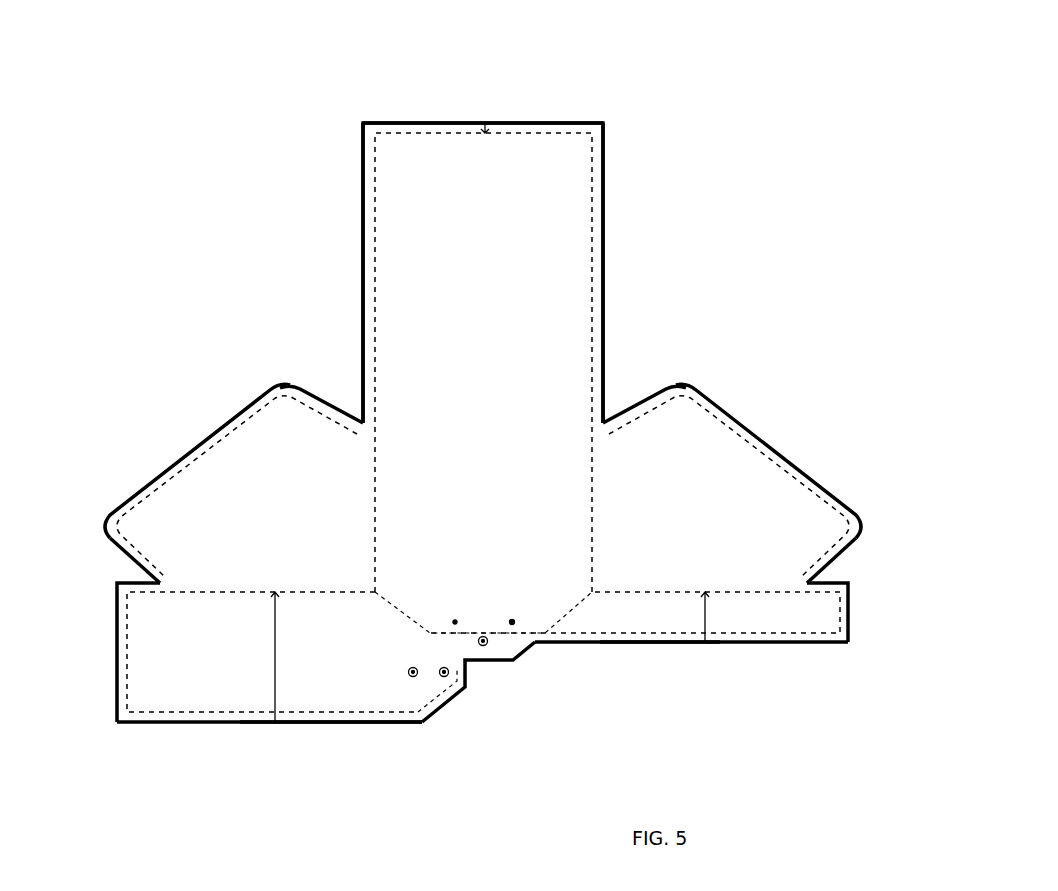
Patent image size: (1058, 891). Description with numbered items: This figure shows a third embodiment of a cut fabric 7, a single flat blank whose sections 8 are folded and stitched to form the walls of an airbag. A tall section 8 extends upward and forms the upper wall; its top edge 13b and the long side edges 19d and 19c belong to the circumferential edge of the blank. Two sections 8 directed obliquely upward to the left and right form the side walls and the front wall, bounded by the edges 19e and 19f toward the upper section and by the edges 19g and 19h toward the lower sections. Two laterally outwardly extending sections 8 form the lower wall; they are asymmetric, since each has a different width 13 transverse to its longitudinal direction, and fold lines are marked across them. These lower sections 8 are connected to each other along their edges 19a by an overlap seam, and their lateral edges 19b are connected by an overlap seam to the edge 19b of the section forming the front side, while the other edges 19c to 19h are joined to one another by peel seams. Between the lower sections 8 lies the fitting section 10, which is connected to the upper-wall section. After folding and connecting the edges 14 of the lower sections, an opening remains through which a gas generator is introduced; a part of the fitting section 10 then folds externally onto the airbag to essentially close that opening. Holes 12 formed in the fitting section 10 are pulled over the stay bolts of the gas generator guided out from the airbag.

The cut fabric 7 is at (660, 160).
The edge section 13b is at (535, 122).
The edge 19d is at (362, 200).
The edge 19c is at (605, 212).
The edge 19e is at (322, 393).
The edge 19f is at (632, 404).
The edge 19g is at (133, 581).
The edge 19h is at (837, 582).
The lateral edge 19b is at (117, 647).
The edge 19a is at (195, 722).
The section 8 is at (195, 680).
The width 13 is at (272, 680).
The edge 14 is at (275, 722).
The hole 12 is at (411, 673).
The fitting section 10 is at (500, 622).